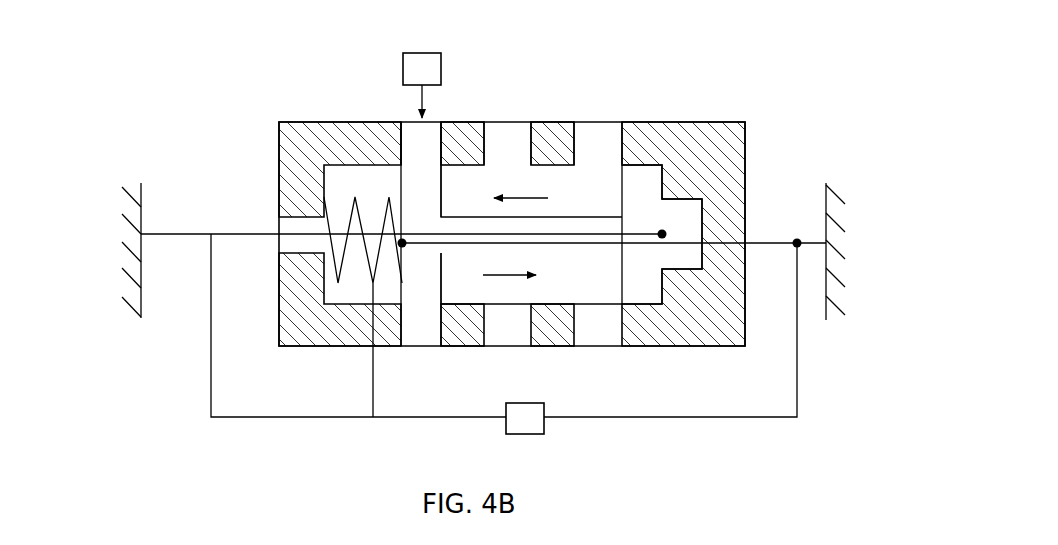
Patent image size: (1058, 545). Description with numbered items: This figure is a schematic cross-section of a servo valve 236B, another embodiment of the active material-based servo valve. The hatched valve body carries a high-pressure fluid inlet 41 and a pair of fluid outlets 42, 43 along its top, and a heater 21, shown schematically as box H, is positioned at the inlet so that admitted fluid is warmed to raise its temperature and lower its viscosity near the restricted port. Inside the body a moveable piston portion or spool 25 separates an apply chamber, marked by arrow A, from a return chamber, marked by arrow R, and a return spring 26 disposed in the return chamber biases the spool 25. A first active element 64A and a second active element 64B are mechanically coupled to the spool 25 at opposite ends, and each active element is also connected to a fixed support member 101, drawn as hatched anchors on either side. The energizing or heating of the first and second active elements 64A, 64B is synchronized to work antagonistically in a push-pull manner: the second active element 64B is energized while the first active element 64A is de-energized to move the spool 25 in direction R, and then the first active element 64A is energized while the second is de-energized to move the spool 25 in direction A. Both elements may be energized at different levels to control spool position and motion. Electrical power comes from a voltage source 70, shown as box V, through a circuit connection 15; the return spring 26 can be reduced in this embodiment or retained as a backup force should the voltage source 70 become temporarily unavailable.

The servo valve 236B is at (784, 117).
The heater 21 is at (402, 77).
The HP fluid inlet 41 is at (441, 143).
The fluid outlet 42 is at (531, 143).
The fluid outlet 43 is at (622, 143).
The spool 25 is at (637, 283).
The return spring 26 is at (367, 255).
The first active element 64A is at (234, 232).
The second active element 64B is at (784, 242).
The support member 101 is at (134, 312).
The circuit connection 15 is at (210, 291).
The voltage source 70 is at (544, 408).